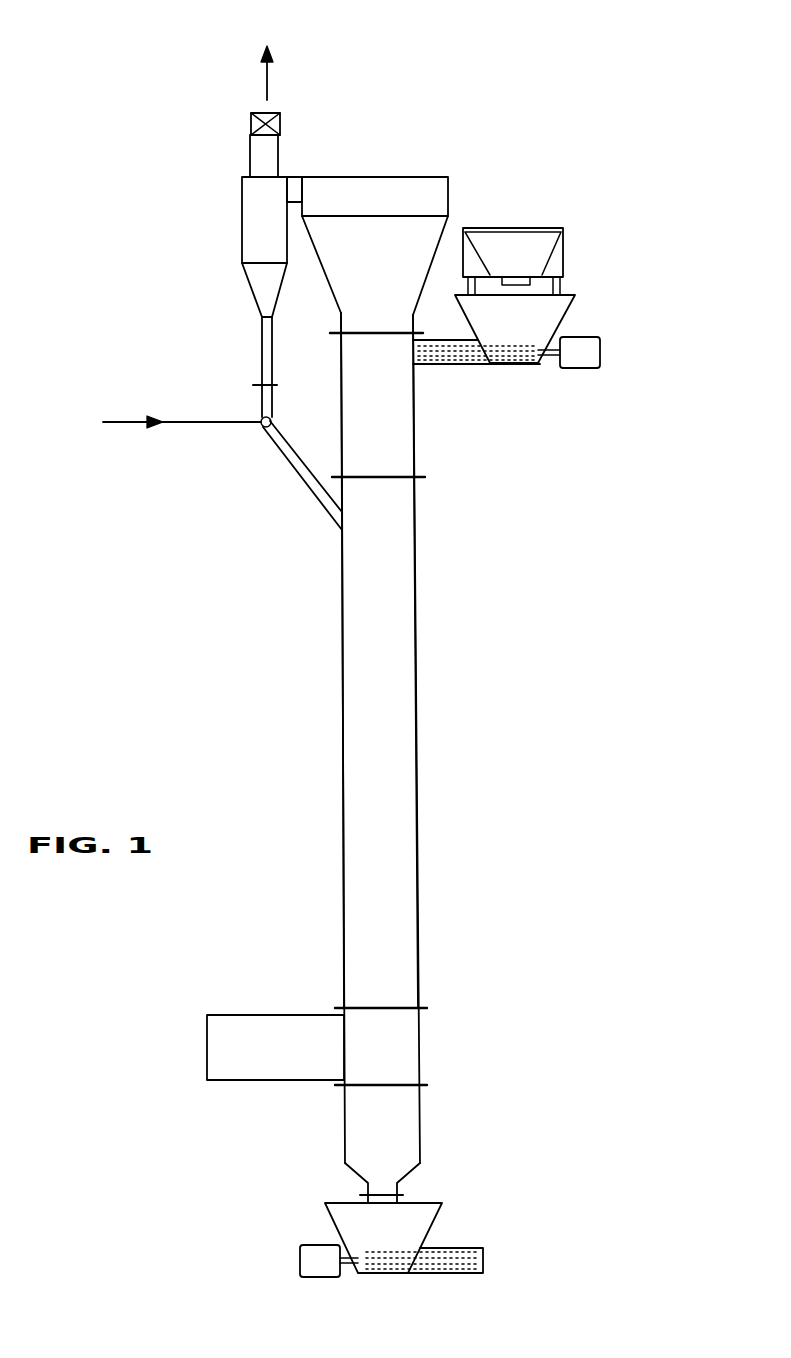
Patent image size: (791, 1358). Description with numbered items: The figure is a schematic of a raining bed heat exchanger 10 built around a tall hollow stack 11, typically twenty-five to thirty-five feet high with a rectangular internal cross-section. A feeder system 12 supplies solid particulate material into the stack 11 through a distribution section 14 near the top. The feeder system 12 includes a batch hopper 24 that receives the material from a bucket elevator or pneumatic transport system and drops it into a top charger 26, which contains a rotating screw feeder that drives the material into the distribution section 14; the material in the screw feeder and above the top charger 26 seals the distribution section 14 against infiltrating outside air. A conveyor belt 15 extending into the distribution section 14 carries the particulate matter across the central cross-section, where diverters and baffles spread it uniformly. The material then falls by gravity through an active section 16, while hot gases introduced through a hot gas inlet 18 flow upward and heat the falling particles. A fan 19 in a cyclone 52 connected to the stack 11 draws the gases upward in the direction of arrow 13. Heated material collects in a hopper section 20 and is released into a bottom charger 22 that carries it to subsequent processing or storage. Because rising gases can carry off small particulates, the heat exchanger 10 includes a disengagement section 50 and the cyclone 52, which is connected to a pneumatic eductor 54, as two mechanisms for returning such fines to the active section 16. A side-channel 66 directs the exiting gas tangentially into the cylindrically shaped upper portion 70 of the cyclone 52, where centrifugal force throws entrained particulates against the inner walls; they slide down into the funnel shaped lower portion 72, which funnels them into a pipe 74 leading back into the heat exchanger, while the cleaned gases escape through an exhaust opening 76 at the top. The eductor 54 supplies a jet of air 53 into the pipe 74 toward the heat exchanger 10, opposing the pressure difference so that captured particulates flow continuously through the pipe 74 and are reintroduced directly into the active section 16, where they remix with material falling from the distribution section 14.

The raining bed heat exchanger 10 is at (562, 512).
The hollow stack 11 is at (355, 707).
The feeder system 12 is at (586, 261).
The arrow 13 is at (290, 63).
The distribution section 14 is at (405, 435).
The conveyor belt 15 is at (448, 368).
The active section 16 is at (395, 570).
The hot gas inlet 18 is at (275, 1025).
The fan 19 is at (282, 124).
The hopper section 20 is at (413, 1108).
The bottom charger 22 is at (420, 1223).
The batch hopper 24 is at (535, 233).
The top charger 26 is at (553, 313).
The disengagement section 50 is at (413, 238).
The cyclone 52 is at (232, 245).
The jet of air 53 is at (125, 422).
The pneumatic eductor 54 is at (258, 427).
The side-channel 66 is at (302, 190).
The cylindrically shaped upper portion 70 is at (253, 202).
The funnel shaped lower portion 72 is at (262, 288).
The pipe 74 is at (290, 465).
The exhaust opening 76 is at (257, 148).